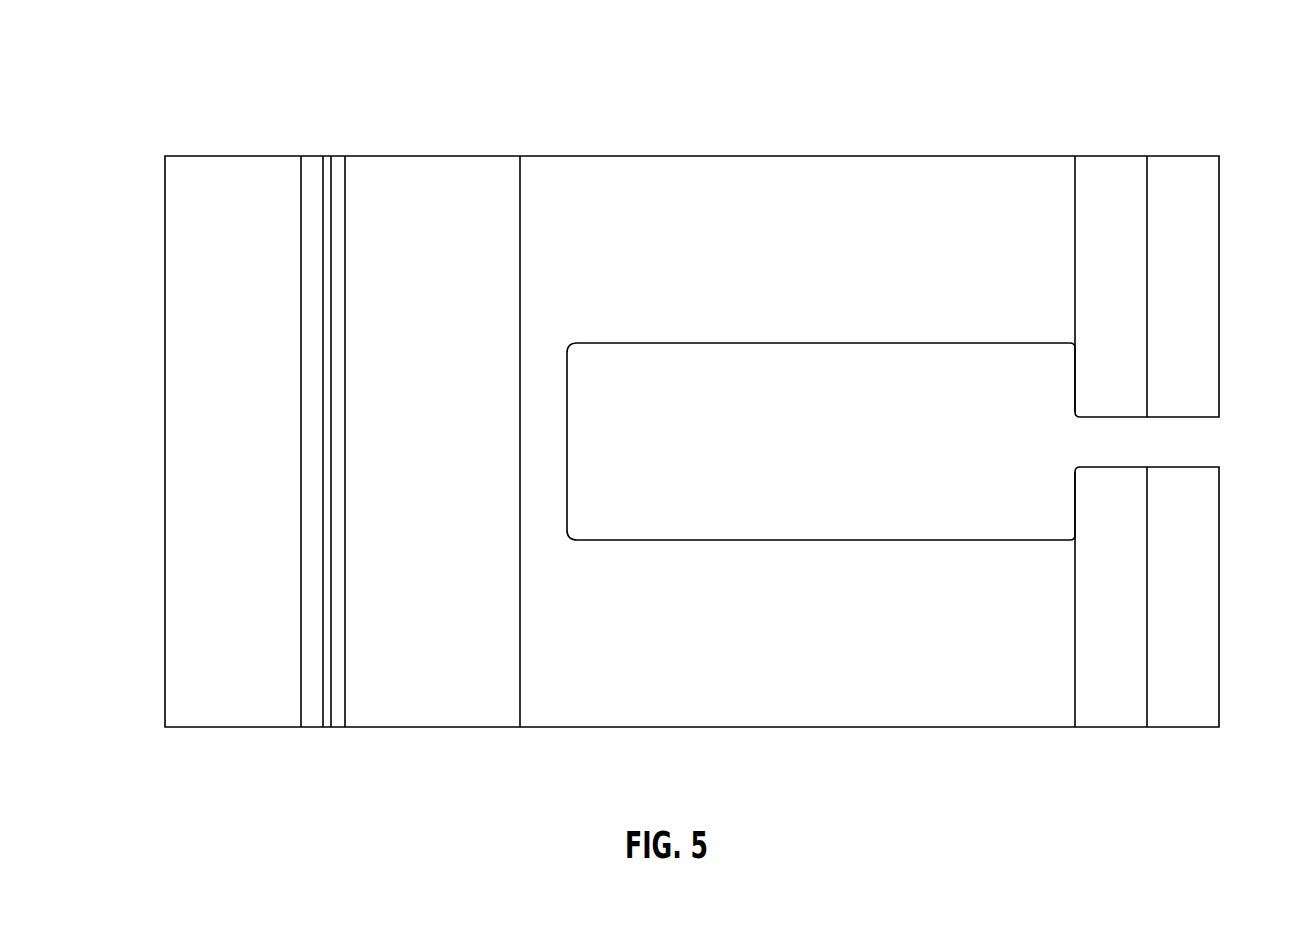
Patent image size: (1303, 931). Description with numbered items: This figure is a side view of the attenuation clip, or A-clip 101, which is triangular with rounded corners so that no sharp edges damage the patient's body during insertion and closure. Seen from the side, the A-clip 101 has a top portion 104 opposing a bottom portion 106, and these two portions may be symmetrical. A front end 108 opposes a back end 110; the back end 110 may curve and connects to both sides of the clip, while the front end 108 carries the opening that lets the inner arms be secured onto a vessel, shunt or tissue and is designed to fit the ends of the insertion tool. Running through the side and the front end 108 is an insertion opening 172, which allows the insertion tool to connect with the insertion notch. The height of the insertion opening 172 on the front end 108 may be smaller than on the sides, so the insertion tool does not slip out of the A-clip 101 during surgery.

The A-clip 101 is at (702, 381).
The top portion 104 is at (186, 205).
The back end 110 is at (186, 631).
The front end 108 is at (1193, 252).
The bottom portion 106 is at (1128, 702).
The insertion opening 172 is at (869, 495).